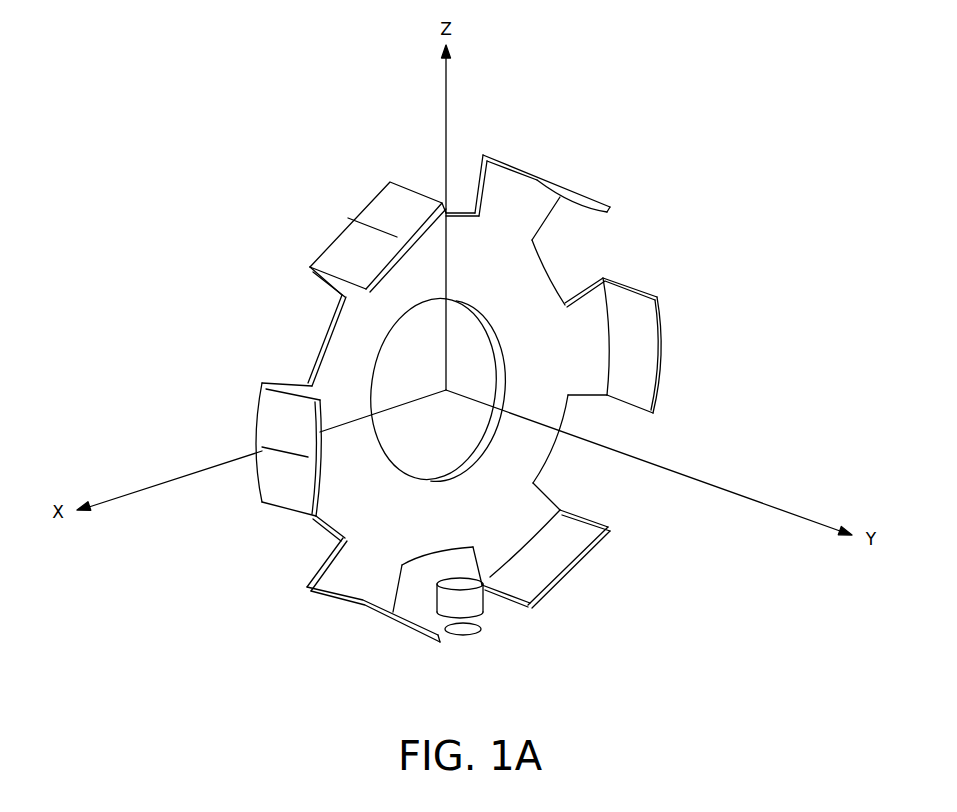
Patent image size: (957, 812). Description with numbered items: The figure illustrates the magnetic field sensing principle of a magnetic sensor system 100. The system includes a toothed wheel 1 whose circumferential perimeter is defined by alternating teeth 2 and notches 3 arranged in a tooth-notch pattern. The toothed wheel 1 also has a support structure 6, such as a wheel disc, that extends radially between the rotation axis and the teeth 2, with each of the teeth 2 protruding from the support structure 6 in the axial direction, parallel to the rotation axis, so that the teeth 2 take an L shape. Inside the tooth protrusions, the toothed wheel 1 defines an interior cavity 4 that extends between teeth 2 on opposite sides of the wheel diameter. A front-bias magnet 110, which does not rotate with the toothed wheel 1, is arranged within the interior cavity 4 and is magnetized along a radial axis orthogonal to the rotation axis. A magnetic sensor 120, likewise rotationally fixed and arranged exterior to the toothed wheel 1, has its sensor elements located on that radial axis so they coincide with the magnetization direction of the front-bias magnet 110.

The magnetic sensor system 100 is at (158, 38).
The toothed wheel 1 is at (403, 145).
The teeth 2 is at (335, 245).
The notches 3 is at (297, 335).
The interior cavity 4 is at (359, 547).
The support structure 6 is at (548, 498).
The front-bias magnet 110 is at (486, 609).
The magnetic sensor 120 is at (471, 636).